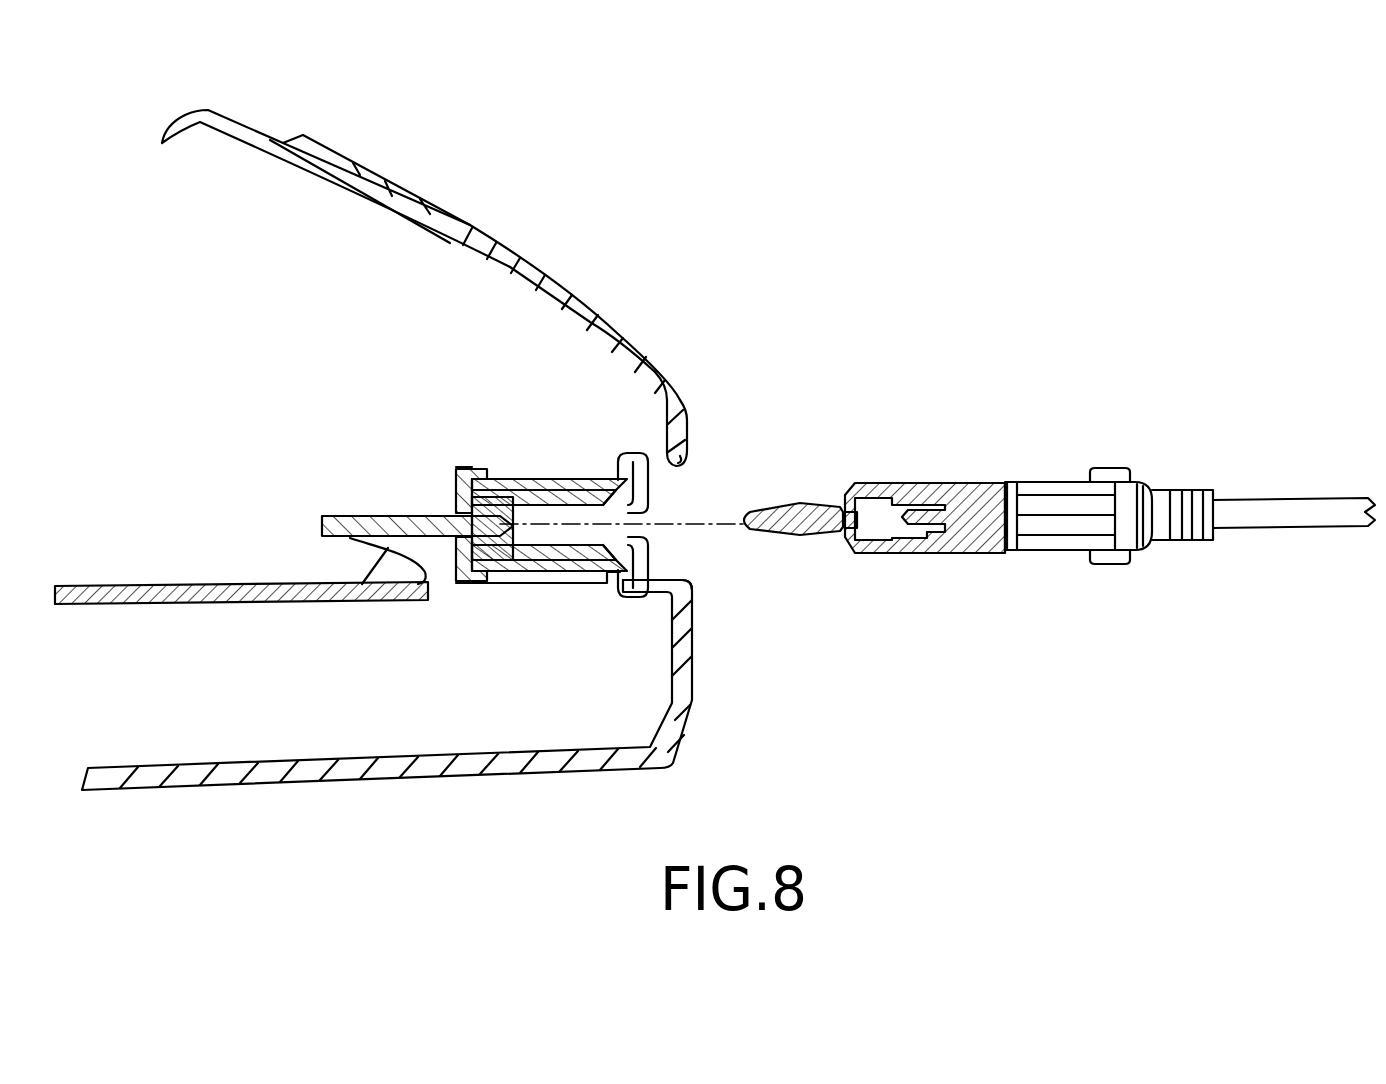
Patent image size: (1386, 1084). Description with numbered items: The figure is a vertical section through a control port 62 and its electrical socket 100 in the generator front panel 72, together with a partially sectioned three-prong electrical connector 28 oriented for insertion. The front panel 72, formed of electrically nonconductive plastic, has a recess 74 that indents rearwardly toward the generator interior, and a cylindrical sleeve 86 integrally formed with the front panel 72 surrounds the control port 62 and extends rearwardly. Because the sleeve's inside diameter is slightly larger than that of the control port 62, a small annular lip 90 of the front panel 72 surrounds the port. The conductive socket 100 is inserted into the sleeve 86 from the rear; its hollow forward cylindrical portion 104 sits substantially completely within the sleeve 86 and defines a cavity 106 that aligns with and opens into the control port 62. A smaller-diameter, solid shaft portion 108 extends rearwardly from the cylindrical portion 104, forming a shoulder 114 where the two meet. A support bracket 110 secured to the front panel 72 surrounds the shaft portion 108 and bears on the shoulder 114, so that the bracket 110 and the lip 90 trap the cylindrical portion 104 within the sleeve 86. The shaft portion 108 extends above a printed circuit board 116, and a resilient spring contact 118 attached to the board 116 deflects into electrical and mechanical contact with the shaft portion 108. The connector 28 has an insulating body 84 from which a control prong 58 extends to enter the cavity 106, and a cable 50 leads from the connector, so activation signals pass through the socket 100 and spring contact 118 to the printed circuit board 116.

The three-prong electrical connector 28 is at (1093, 462).
The coaxial cable 50 is at (1247, 512).
The control prong 58 is at (783, 533).
The control port 62 is at (648, 535).
The front panel 72 is at (530, 257).
The recess 74 is at (667, 467).
The insulating body 84 is at (1053, 533).
The cylindrical sleeve 86 is at (537, 486).
The annular lip 90 is at (637, 493).
The socket 100 is at (390, 509).
The forward cylindrical portion 104 is at (567, 497).
The cavity 106 is at (657, 500).
The shaft portion 108 is at (327, 514).
The support bracket 110 is at (453, 512).
The shoulder 114 is at (450, 583).
The printed circuit board 116 is at (97, 586).
The spring contact 118 is at (367, 590).